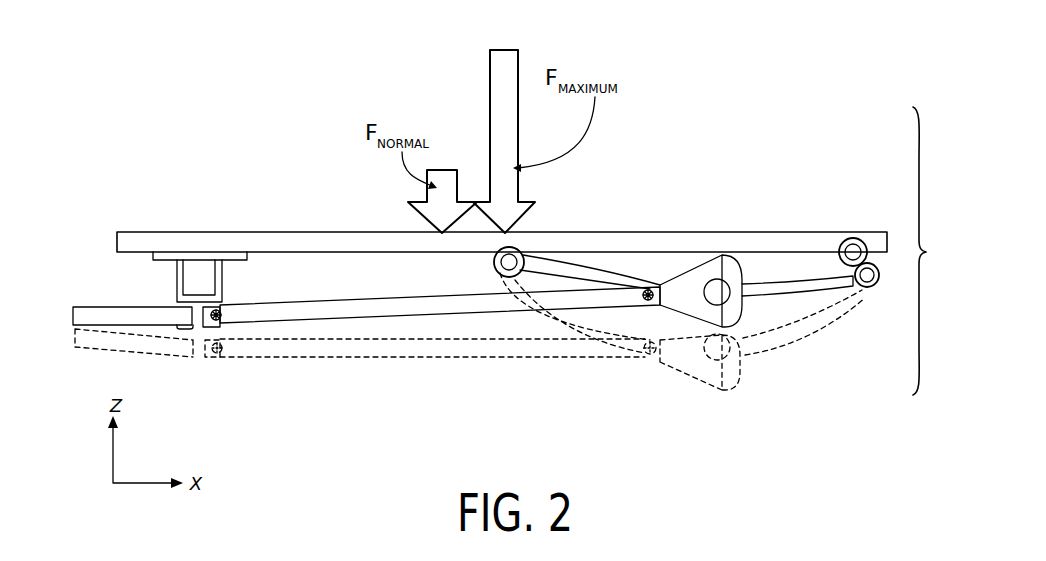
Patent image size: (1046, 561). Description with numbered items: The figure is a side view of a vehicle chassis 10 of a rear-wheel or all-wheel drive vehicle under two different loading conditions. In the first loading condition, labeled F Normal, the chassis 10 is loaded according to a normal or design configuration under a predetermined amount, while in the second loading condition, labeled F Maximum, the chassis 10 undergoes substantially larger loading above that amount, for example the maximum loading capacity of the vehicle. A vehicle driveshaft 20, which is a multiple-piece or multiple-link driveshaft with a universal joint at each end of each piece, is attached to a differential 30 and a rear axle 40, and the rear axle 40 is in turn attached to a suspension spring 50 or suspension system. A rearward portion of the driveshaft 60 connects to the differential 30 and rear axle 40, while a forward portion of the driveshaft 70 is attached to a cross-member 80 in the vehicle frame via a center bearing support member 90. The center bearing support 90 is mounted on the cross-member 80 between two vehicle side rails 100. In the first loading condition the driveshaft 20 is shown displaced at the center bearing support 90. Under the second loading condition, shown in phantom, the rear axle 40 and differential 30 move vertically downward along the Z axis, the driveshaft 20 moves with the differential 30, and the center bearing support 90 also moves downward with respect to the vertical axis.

The vehicle chassis 10 is at (933, 251).
The vehicle driveshaft 20 is at (287, 312).
The differential 30 is at (673, 285).
The rear axle 40 is at (718, 279).
The suspension spring 50 is at (780, 288).
The rearward portion of the driveshaft 60 is at (451, 289).
The forward portion of the driveshaft 70 is at (152, 315).
The cross-member 80 is at (193, 275).
The center bearing support member 90 is at (205, 360).
The vehicle side rails 100 is at (272, 238).